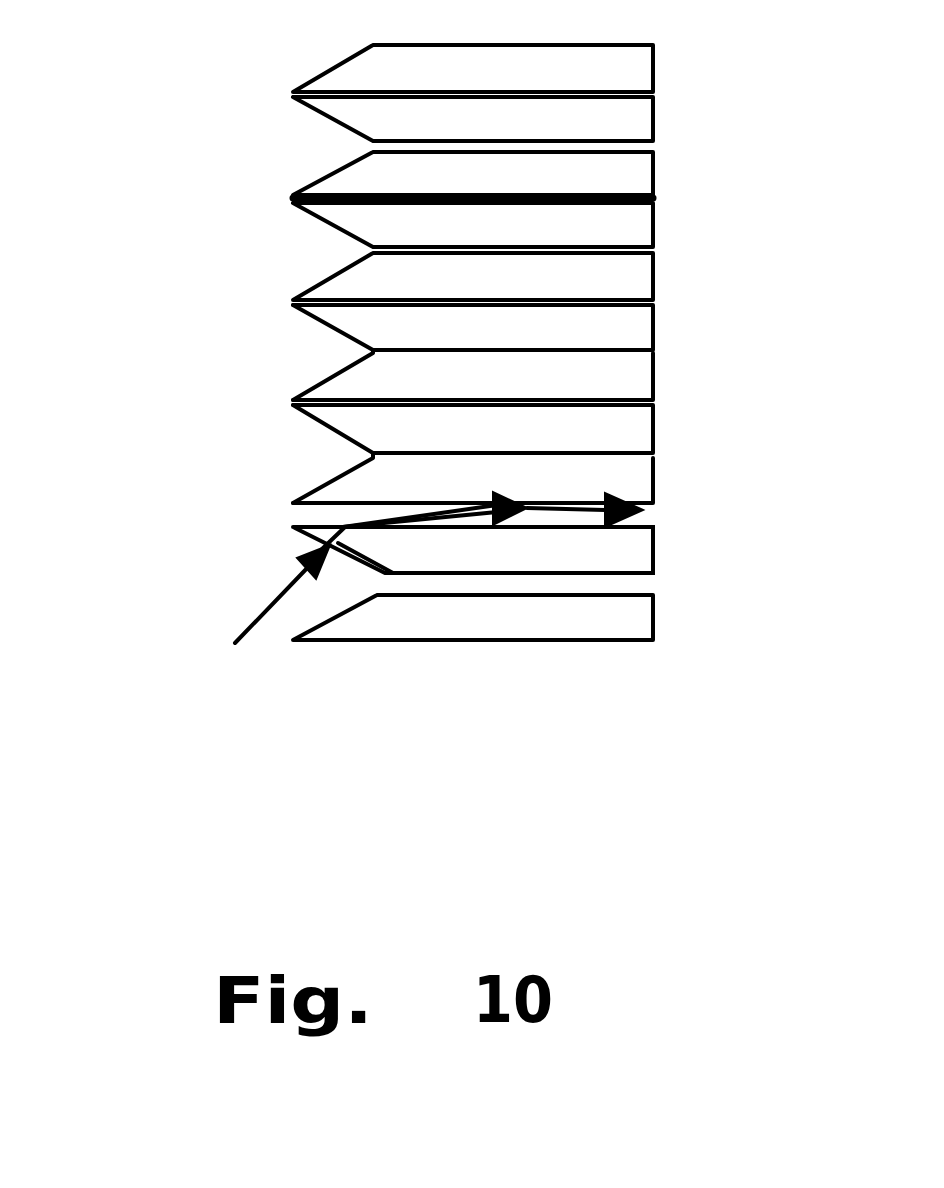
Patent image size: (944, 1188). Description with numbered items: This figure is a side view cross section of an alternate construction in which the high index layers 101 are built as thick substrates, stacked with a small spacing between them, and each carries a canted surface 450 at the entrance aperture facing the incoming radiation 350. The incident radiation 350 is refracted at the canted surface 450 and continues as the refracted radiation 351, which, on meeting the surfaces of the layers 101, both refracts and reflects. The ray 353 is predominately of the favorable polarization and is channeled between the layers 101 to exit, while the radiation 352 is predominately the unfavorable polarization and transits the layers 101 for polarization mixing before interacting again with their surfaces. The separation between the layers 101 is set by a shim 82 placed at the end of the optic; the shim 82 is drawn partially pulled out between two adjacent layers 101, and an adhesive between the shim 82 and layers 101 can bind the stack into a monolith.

The shim 82 is at (293, 198).
The high index layer 101 is at (484, 342).
The canted surface 450 is at (317, 323).
The incoming radiation 350 is at (260, 613).
The refracted radiation 351 is at (393, 573).
The unfavorable polarization radiation 352 is at (453, 517).
The favorable polarization ray 353 is at (575, 517).